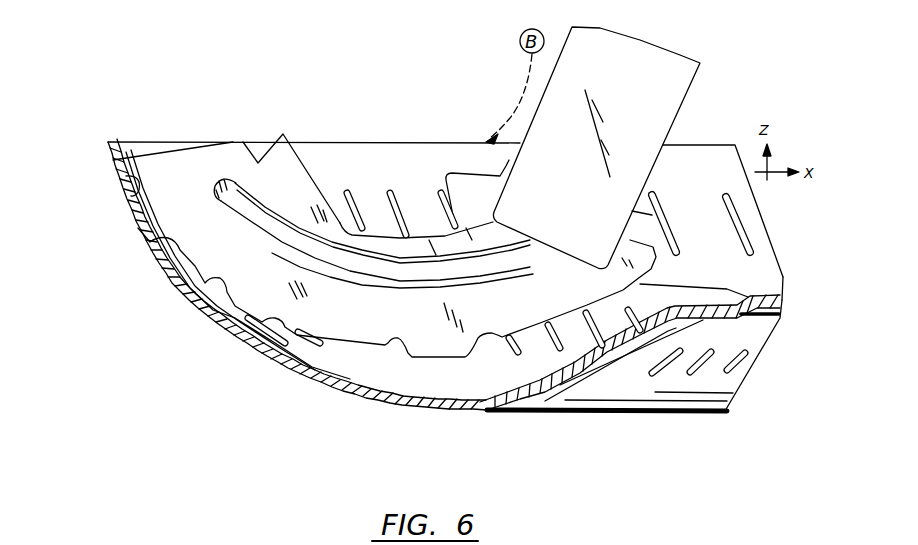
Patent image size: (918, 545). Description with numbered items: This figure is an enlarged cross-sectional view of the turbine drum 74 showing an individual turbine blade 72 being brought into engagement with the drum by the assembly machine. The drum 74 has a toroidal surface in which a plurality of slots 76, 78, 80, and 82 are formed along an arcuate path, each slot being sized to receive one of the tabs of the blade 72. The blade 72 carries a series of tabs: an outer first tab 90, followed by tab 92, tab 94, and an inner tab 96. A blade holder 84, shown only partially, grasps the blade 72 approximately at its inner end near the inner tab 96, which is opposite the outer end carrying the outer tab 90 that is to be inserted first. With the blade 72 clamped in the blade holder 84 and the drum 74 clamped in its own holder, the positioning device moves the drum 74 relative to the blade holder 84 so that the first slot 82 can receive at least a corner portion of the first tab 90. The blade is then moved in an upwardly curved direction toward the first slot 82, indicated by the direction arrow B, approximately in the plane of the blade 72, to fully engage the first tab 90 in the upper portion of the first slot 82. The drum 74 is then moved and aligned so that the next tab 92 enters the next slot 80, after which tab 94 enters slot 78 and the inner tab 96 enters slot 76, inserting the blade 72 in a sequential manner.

The turbine blade 72 is at (172, 165).
The turbine drum 74 is at (112, 165).
The slot 76 is at (603, 358).
The slot 78 is at (403, 405).
The slot 80 is at (237, 345).
The first slot 82 is at (143, 245).
The blade holder 84 is at (683, 88).
The first tab 90 is at (127, 212).
The tab 92 is at (217, 330).
The tab 94 is at (460, 357).
The inner tab 96 is at (640, 273).